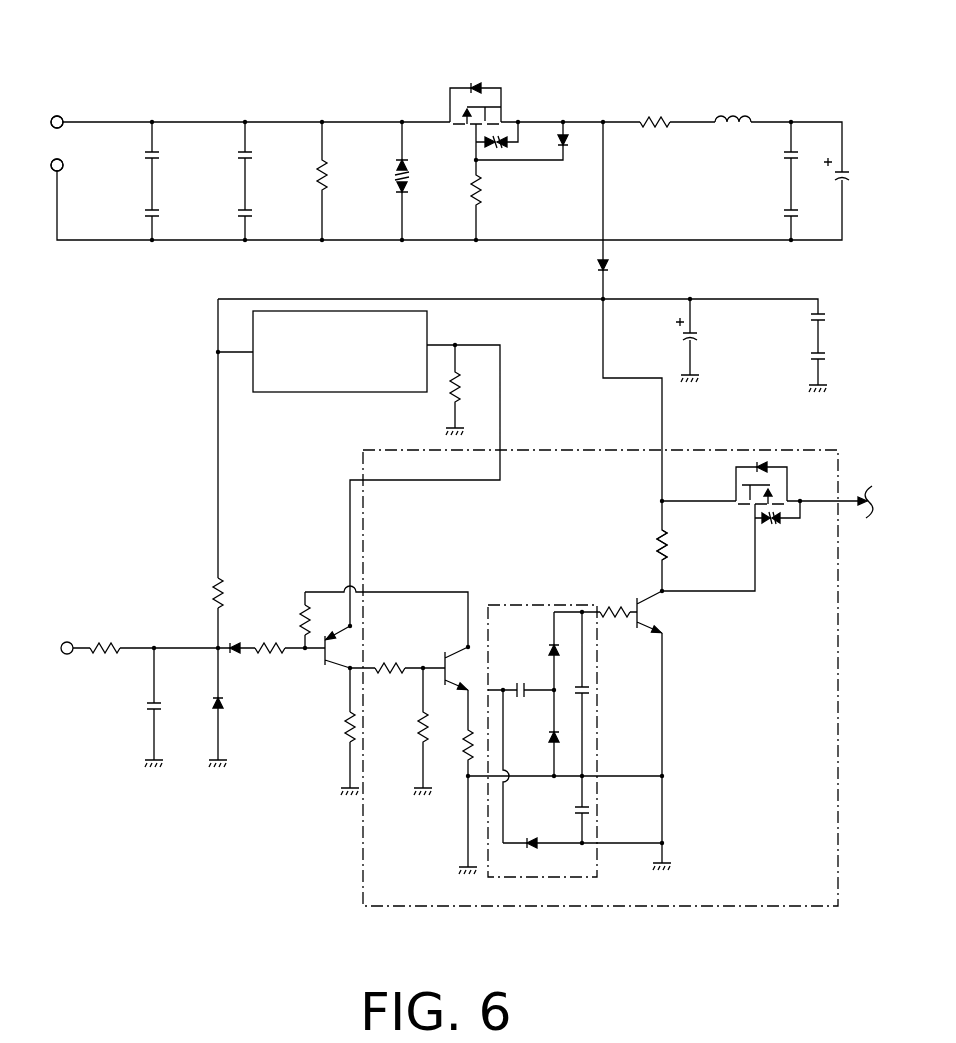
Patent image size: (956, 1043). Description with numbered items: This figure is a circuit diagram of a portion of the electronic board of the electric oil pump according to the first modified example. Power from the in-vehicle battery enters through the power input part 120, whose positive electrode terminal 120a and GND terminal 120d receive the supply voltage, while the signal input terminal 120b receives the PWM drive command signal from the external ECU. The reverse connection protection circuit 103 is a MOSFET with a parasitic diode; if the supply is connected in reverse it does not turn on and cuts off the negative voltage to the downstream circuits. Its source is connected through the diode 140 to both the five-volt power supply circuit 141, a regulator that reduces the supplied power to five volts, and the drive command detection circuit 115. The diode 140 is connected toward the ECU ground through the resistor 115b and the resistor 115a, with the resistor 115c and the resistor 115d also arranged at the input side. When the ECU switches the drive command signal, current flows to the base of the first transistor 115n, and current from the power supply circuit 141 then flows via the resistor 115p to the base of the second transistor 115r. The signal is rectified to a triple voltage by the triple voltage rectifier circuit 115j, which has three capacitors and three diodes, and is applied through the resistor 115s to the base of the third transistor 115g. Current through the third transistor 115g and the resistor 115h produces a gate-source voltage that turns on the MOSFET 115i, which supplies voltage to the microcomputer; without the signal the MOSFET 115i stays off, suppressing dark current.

The power input part 120 is at (67, 108).
The positive electrode terminal 120a is at (65, 128).
The signal input terminal 120b is at (67, 640).
The GND terminal 120d is at (63, 170).
The reverse connection protection circuit 103 is at (500, 80).
The diode 140 is at (618, 265).
The 5V power supply circuit 141 is at (290, 393).
The drive command detection circuit 115 is at (543, 450).
The resistor 115a is at (113, 637).
The resistor 115b is at (205, 582).
The resistor 115c is at (267, 665).
The resistor 115d is at (297, 612).
The third transistor 115g is at (667, 614).
The resistor 115h is at (648, 540).
The MOSFET 115i is at (775, 535).
The triple voltage rectifier circuit 115j is at (536, 605).
The first transistor 115n is at (328, 672).
The resistor 115p is at (387, 660).
The second transistor 115r is at (452, 642).
The resistor 115s is at (617, 632).